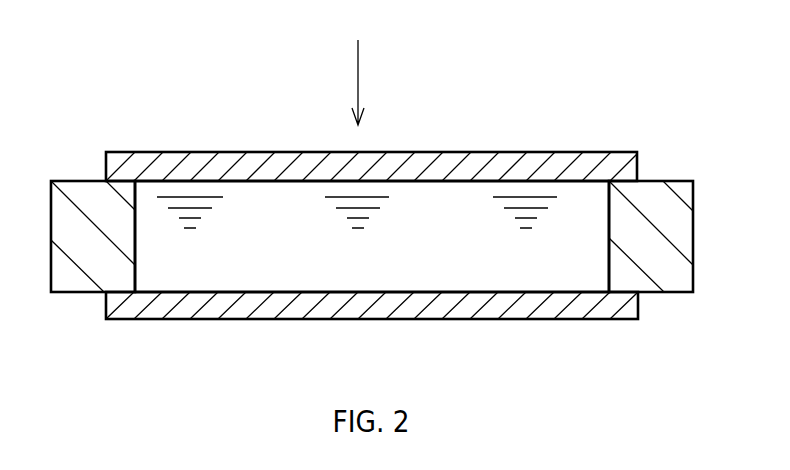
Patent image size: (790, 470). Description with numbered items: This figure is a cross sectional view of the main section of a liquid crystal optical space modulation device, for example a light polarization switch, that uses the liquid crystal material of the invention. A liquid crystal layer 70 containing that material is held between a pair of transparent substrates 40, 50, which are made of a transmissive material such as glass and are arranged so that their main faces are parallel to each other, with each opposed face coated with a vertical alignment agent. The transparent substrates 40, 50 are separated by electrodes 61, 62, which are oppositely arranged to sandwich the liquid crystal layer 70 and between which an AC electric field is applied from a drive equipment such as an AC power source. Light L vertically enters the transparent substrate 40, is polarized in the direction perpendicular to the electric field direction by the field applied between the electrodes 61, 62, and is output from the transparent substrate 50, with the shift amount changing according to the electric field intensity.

The transparent substrate 40 is at (527, 168).
The transparent substrate 50 is at (222, 302).
The electrode 61 is at (79, 193).
The electrode 62 is at (665, 192).
The liquid crystal layer 70 is at (470, 277).
The light L is at (360, 78).